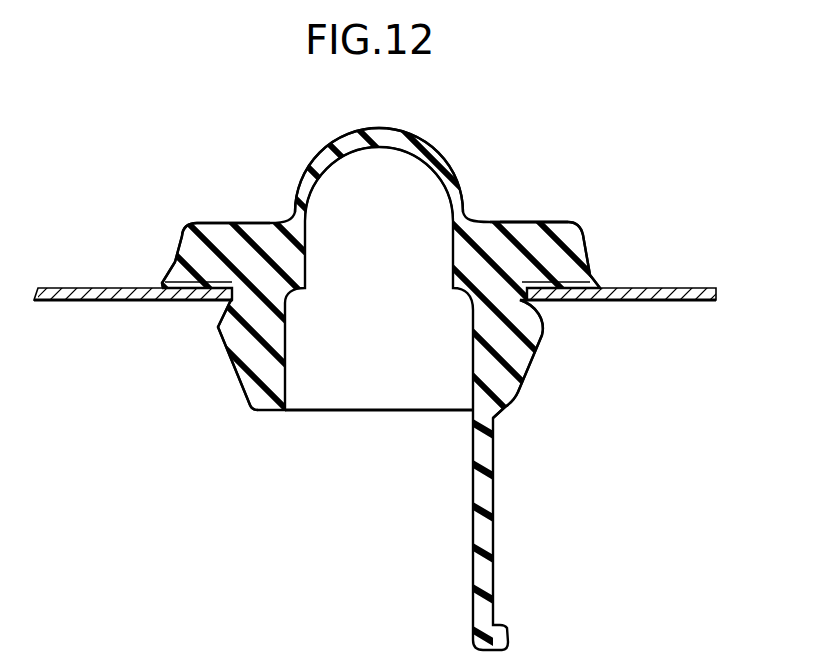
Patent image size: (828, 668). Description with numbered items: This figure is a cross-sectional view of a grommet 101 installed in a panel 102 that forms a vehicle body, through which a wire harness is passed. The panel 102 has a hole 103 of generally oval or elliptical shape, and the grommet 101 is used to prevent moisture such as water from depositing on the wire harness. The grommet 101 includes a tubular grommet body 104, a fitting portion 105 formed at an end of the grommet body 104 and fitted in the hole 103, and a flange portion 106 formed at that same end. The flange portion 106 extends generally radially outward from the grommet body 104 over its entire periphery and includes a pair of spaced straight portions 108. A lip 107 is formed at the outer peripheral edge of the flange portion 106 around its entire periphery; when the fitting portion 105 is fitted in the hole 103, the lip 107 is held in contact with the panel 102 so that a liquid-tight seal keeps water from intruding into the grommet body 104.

The grommet 101 is at (535, 166).
The panel 102 is at (650, 301).
The hole 103 is at (523, 327).
The grommet body 104 is at (413, 135).
The fitting portion 105 is at (518, 401).
The flange portion 106 is at (533, 222).
The lip 107 is at (158, 288).
The straight portions 108 is at (230, 255).